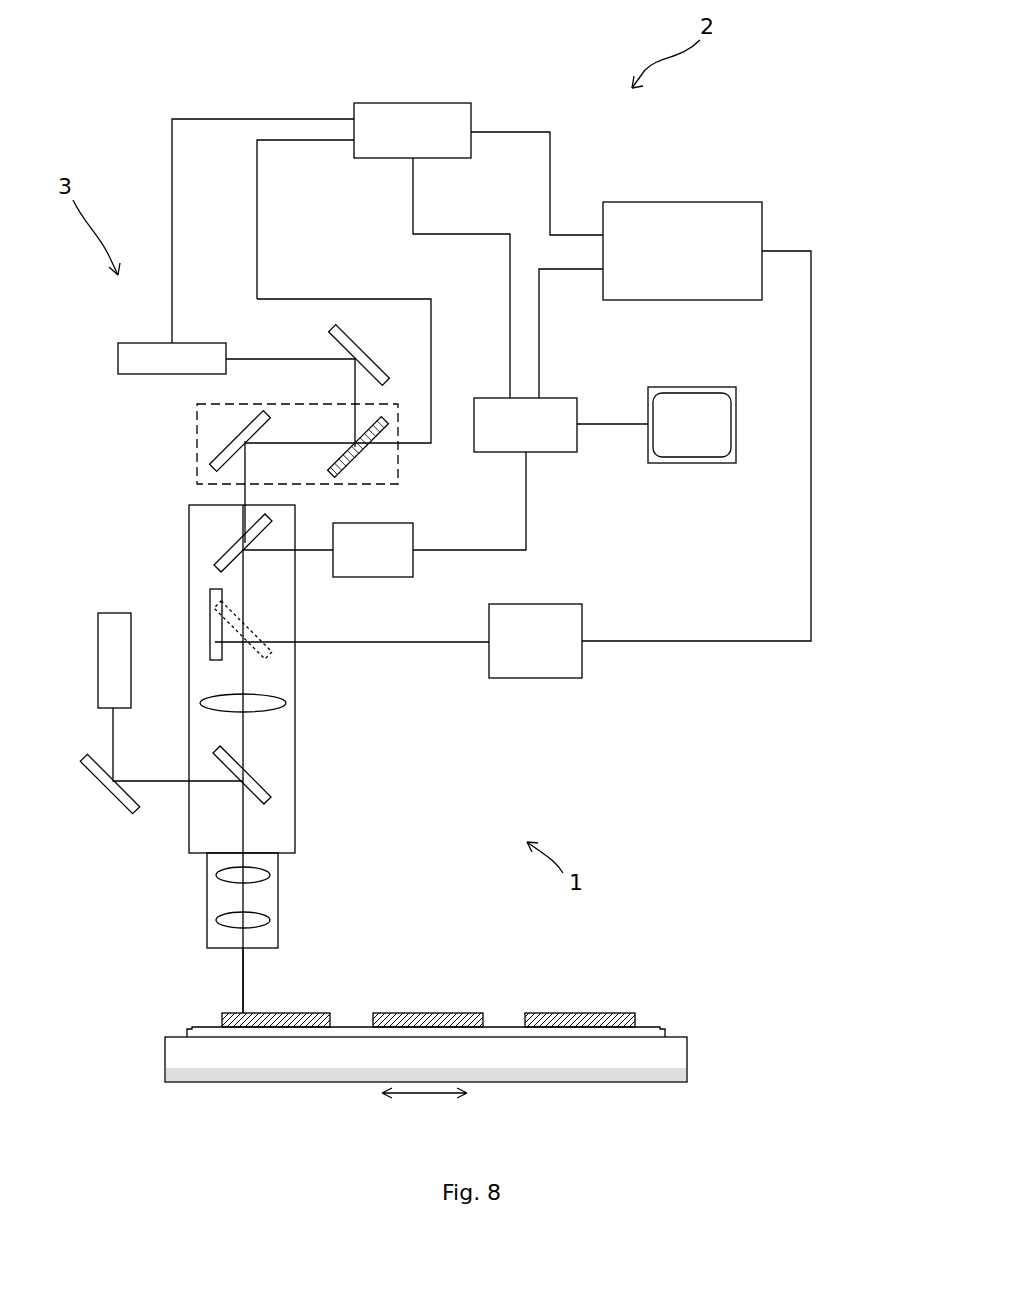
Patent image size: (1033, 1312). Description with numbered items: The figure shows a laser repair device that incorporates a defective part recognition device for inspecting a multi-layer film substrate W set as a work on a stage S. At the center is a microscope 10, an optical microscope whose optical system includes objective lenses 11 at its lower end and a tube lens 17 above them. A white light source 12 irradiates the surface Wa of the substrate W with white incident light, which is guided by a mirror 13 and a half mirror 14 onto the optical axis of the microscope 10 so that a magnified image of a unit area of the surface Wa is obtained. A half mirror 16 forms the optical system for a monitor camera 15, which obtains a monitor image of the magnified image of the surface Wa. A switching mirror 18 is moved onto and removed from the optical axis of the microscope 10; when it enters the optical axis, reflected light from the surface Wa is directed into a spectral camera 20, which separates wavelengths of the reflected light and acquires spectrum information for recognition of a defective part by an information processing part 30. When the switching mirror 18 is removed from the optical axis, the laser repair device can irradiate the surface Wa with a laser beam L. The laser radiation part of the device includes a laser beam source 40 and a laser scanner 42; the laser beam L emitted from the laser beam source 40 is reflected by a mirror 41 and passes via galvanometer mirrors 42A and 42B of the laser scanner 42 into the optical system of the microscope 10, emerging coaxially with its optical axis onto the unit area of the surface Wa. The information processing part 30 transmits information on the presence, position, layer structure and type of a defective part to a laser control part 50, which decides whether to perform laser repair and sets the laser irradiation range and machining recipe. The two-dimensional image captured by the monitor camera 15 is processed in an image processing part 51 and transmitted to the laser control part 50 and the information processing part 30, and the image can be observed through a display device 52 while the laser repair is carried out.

The microscope 10 is at (295, 825).
The objective lenses 11 is at (268, 920).
The white light source 12 is at (98, 613).
The mirror 13 is at (100, 790).
The half mirror 14 is at (268, 790).
The monitor camera 15 is at (375, 577).
The half mirror 16 is at (222, 545).
The tube lens 17 is at (287, 703).
The switching mirror 18 is at (210, 622).
The spectral camera 20 is at (570, 604).
The information processing part 30 is at (763, 203).
The laser beam source 40 is at (122, 343).
The mirror 41 is at (333, 336).
The laser scanner 42 is at (197, 470).
The galvanometer mirror 42A is at (225, 440).
The galvanometer mirror 42B is at (378, 455).
The laser control part 50 is at (413, 103).
The image processing part 51 is at (570, 398).
The display device 52 is at (718, 387).
The laser beam L is at (243, 985).
The multi-layer film substrate W is at (665, 1030).
The surface Wa is at (330, 1013).
The stage S is at (688, 1055).